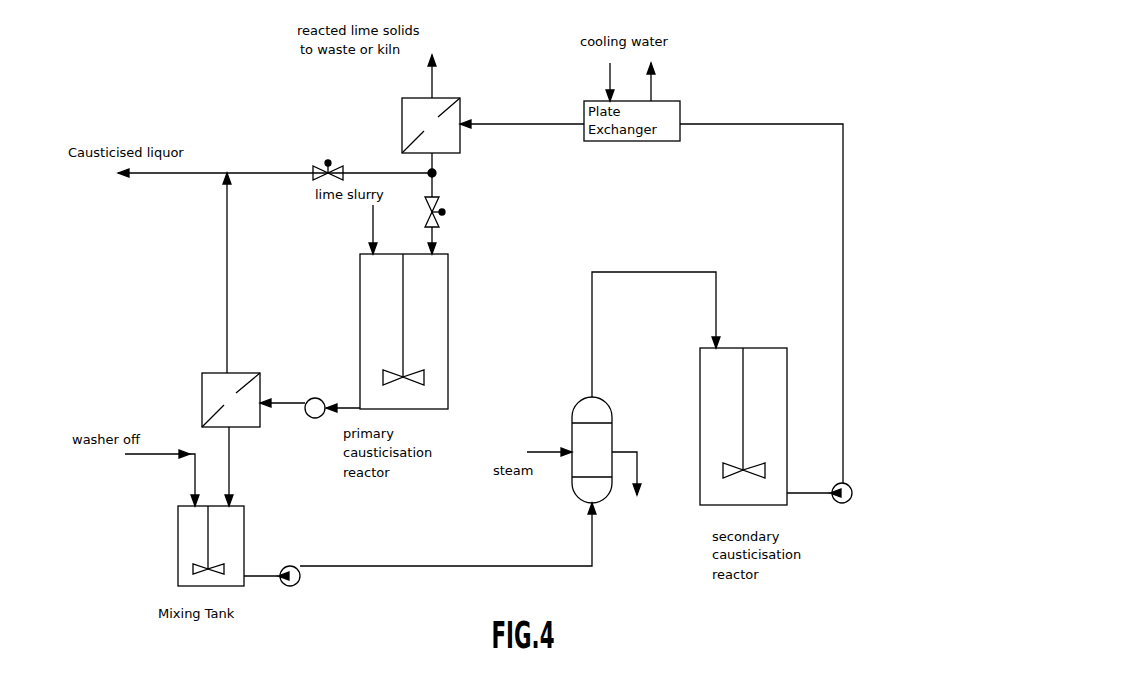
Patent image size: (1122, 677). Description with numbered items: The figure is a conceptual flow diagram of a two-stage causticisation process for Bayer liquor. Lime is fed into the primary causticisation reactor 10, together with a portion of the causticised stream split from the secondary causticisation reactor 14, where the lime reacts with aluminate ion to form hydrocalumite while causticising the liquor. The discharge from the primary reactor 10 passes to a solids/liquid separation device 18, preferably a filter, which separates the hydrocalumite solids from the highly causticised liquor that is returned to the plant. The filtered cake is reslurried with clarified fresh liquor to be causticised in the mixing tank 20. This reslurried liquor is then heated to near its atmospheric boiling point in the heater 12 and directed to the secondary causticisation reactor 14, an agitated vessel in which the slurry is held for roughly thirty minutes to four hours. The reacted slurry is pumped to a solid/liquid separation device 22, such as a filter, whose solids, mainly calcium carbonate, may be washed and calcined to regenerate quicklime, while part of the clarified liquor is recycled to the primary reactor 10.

The primary causticisation reactor 10 is at (448, 309).
The heater 12 is at (572, 412).
The secondary causticisation reactor 14 is at (700, 379).
The solids/liquid separation device 18 is at (202, 381).
The mixing tank 20 is at (178, 538).
The solid/liquid separation device 22 is at (402, 120).